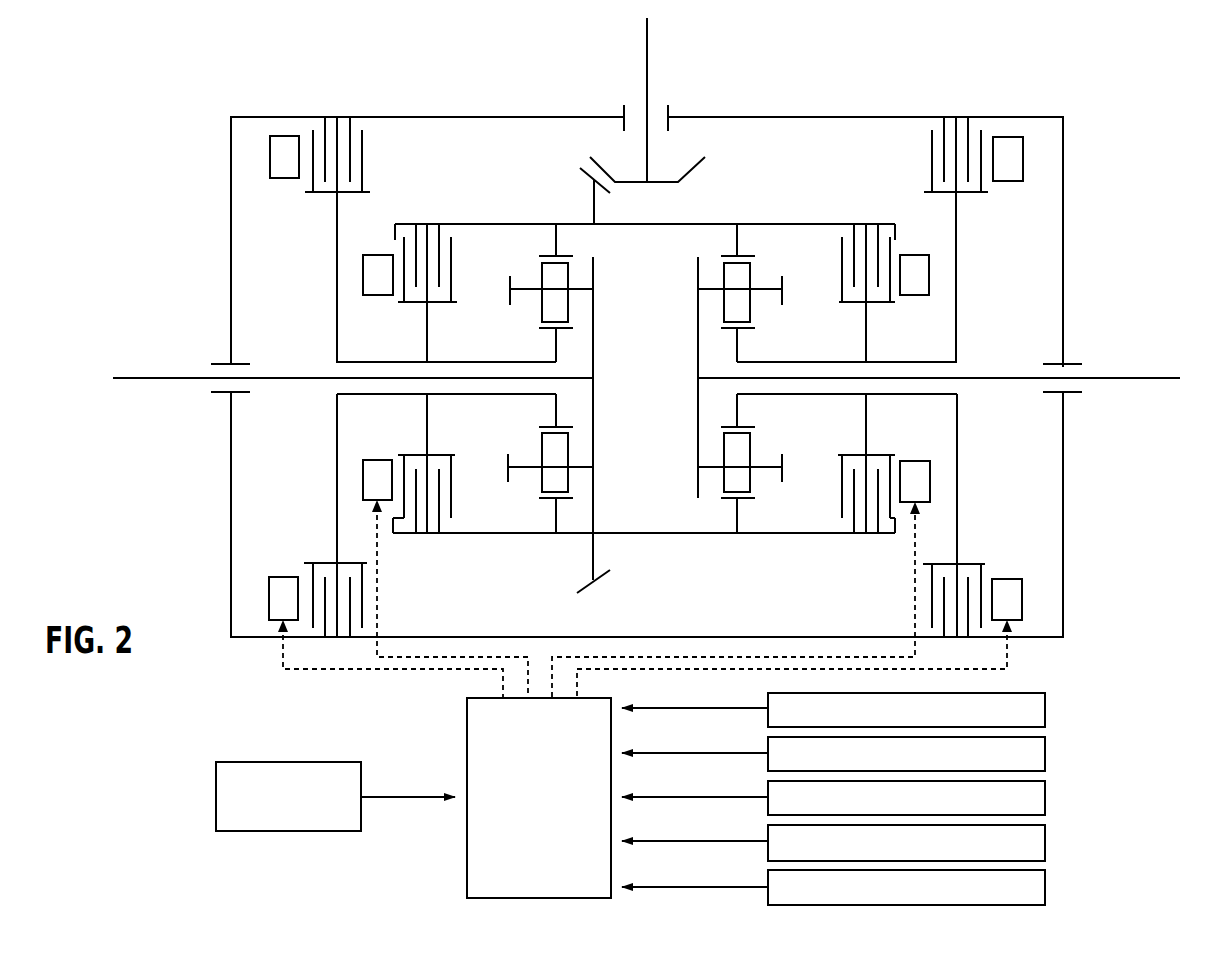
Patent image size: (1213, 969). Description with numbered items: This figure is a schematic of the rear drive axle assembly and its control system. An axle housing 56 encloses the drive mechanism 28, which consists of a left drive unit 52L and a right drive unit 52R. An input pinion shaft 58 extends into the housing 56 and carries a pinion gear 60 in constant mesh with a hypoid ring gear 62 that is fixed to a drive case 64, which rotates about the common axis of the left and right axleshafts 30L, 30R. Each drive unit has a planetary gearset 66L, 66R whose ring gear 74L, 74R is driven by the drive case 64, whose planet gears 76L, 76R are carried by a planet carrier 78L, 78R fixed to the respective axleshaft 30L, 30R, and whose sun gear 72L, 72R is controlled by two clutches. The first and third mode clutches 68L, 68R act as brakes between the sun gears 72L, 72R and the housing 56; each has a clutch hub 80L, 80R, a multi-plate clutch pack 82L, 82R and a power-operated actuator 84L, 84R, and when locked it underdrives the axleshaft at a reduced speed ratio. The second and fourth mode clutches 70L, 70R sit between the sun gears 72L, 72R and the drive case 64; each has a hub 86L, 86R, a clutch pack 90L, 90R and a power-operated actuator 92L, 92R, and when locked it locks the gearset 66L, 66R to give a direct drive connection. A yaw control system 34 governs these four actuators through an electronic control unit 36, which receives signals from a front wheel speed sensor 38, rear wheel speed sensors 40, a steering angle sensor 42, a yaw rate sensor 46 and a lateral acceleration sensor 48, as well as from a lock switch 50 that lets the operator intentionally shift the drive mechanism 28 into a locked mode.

The drive mechanism 28 is at (1128, 97).
The left axleshaft 30L is at (152, 378).
The right axleshaft 30R is at (1128, 378).
The yaw control system 34 is at (405, 850).
The electronic control unit (ECU) 36 is at (470, 722).
The front wheel speed sensor 38 is at (1040, 706).
The rear wheel speed sensors 40 is at (1040, 751).
The steering angle sensor 42 is at (1040, 795).
The yaw rate sensor 46 is at (1040, 840).
The lateral acceleration sensor 48 is at (1040, 885).
The lock switch 50 is at (233, 772).
The left drive unit 52L is at (500, 537).
The right drive unit 52R is at (763, 538).
The axle housing 56 is at (1064, 250).
The input pinion shaft 58 is at (648, 56).
The pinion gear 60 is at (690, 170).
The hypoid ring gear 62 is at (590, 201).
The drive case 64 is at (665, 538).
The planetary gearset 66L is at (602, 302).
The planetary gearset 66R is at (707, 298).
The first mode clutch 68L is at (371, 116).
The third mode clutch 68R is at (985, 116).
The second mode clutch 70L is at (405, 222).
The fourth mode clutch 70R is at (866, 221).
The sun gear 72L is at (553, 346).
The sun gear 72R is at (740, 345).
The ring gear 74L is at (553, 513).
The ring gear 74R is at (742, 511).
The planet gears 76L is at (549, 274).
The planet gears 76R is at (738, 276).
The planet carrier 78L is at (593, 445).
The planet carrier 78R is at (697, 410).
The clutch hub 80L is at (337, 282).
The hub 80R is at (957, 252).
The multi-plate clutch pack 82L is at (351, 146).
The multi-plate clutch pack 82R is at (944, 150).
The power-operated actuator 84L is at (283, 145).
The power-operated actuator 84R is at (1018, 150).
The clutch hub 86L is at (430, 422).
The hub 86R is at (868, 420).
The multi-plate clutch pack 90L is at (425, 523).
The clutch pack 90R is at (860, 525).
The power-operated actuator 92L is at (373, 291).
The power-operated actuator 92R is at (915, 293).